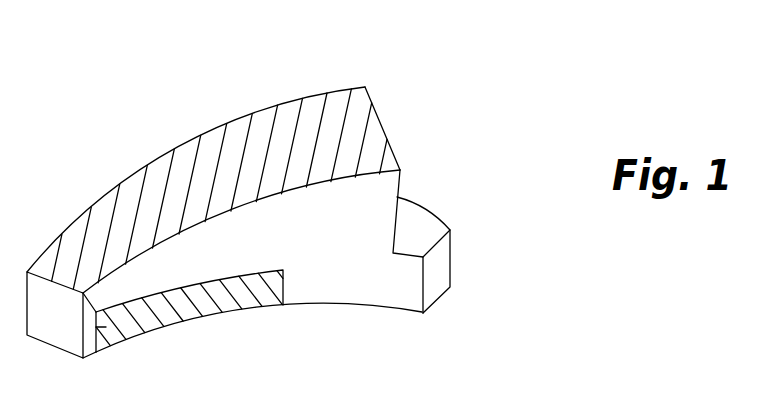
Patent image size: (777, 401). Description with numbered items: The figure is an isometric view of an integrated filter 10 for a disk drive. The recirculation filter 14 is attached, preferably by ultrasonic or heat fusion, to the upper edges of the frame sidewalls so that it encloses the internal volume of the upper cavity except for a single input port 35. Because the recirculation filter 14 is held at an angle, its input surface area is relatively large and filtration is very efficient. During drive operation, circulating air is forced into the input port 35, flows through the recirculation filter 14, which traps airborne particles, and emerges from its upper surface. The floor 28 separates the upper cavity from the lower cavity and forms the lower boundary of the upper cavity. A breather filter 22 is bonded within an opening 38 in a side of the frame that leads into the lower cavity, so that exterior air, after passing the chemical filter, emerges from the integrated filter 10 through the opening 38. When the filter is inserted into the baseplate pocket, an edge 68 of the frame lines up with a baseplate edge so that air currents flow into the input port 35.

The integrated filter 10 is at (156, 82).
The recirculation filter 14 is at (115, 220).
The breather filter 22 is at (145, 317).
The floor 28 is at (413, 227).
The input port 35 is at (412, 165).
The opening 38 is at (248, 270).
The edge 68 is at (437, 243).